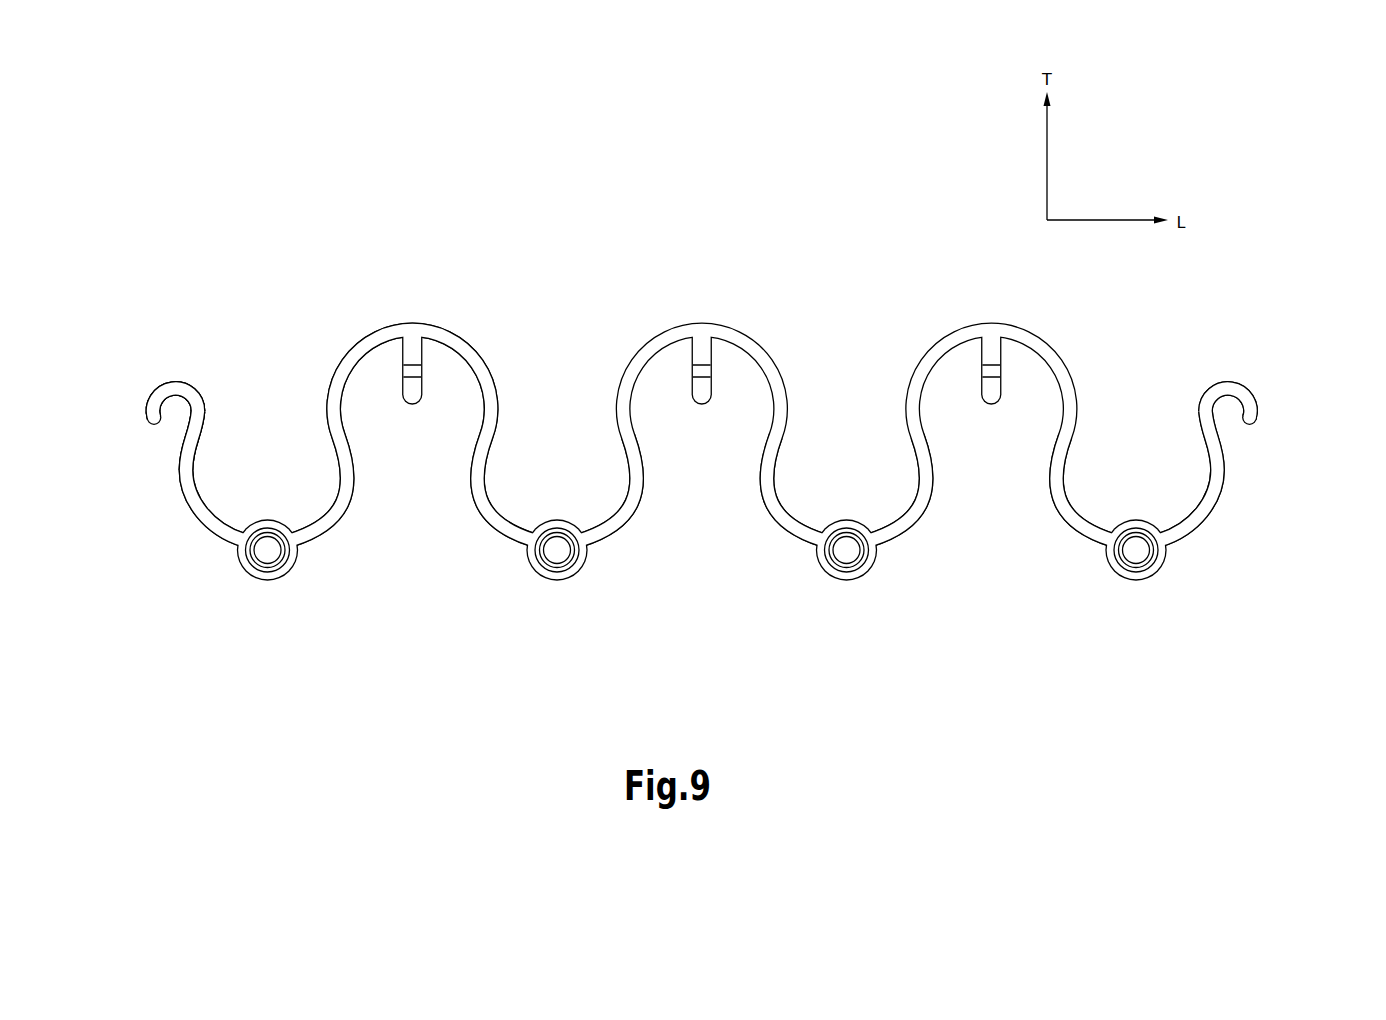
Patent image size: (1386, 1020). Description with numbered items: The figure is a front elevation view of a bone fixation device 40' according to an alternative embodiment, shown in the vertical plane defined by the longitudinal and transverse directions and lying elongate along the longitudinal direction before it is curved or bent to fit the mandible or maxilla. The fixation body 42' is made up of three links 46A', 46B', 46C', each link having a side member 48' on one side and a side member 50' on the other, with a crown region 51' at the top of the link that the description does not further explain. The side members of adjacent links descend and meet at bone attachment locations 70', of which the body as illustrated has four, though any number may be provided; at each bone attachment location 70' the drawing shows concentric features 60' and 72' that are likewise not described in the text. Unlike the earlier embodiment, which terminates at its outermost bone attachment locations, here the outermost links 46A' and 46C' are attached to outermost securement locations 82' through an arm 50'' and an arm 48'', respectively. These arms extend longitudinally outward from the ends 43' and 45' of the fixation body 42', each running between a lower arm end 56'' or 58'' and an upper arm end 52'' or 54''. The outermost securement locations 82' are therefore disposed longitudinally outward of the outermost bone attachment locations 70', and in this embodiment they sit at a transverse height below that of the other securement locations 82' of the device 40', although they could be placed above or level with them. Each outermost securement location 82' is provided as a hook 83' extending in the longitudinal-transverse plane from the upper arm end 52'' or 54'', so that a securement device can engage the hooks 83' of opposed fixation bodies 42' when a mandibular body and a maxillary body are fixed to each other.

The bone fixation device 40' is at (730, 410).
The fixation body 42' is at (151, 299).
The end of fixation body 43' is at (200, 586).
The end of fixation body 45' is at (1185, 604).
The outermost link 46A' is at (433, 398).
The link 46B' is at (726, 398).
The outermost link 46C' is at (1033, 405).
The side member 48' is at (630, 463).
The side member 50' is at (777, 464).
The apex of arch 51' is at (413, 315).
The upper arm end 52'' is at (137, 440).
The upper arm end 54'' is at (1294, 430).
The arm 48'' is at (1272, 460).
The arm 50'' is at (153, 485).
The lower arm end 56'' is at (186, 553).
The lower arm end 58'' is at (1234, 545).
The pin 60' is at (689, 614).
The bone attachment location 70' is at (739, 597).
The pin opening 72' is at (702, 569).
The securement location 82' is at (705, 345).
The hook 83' is at (727, 347).